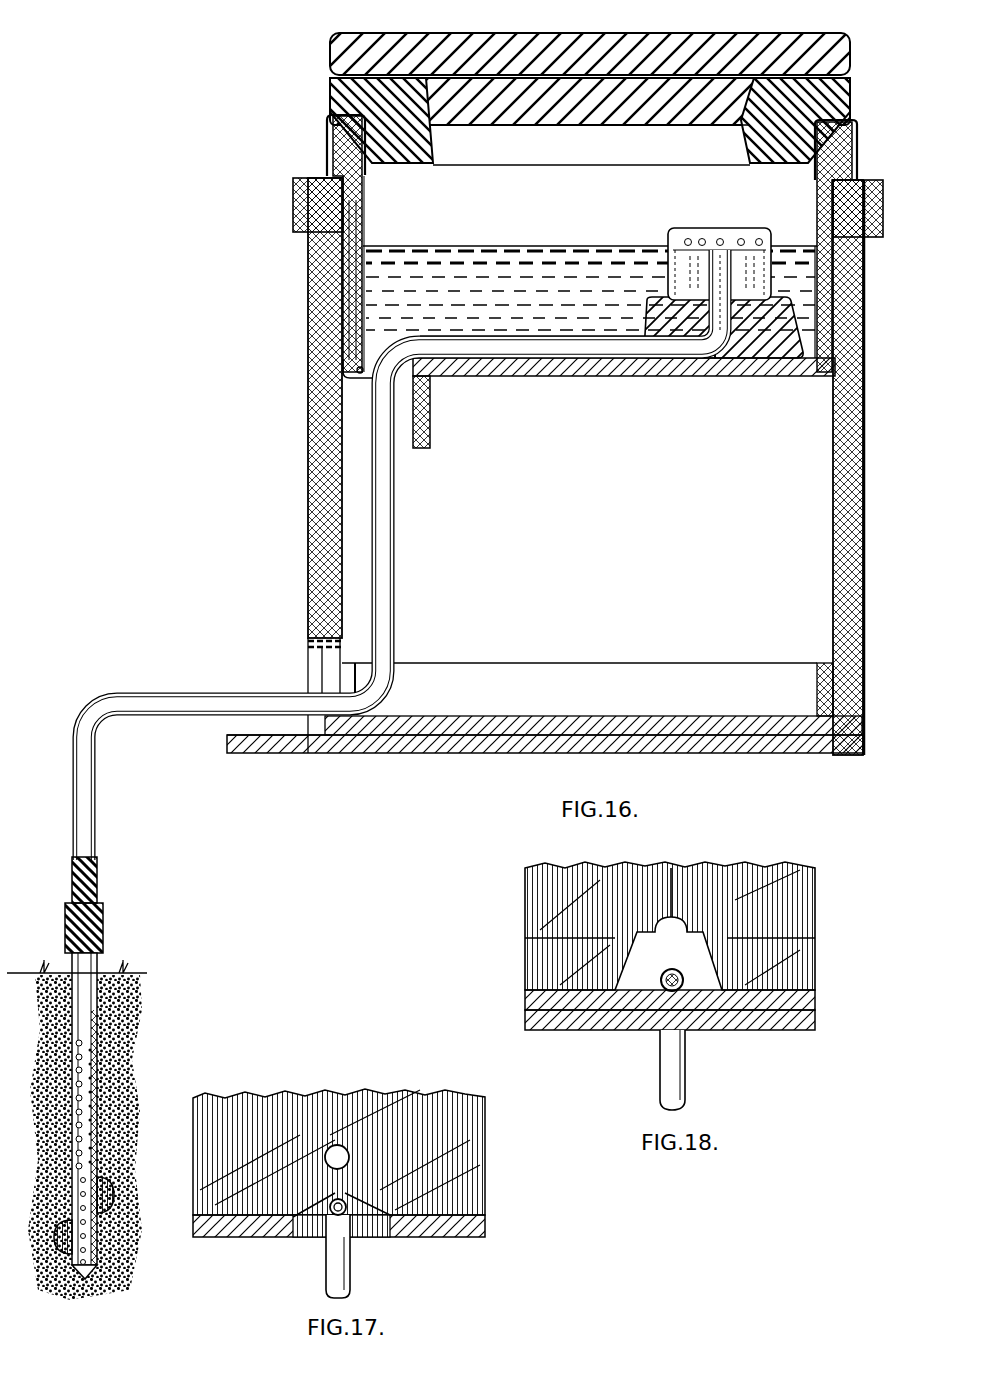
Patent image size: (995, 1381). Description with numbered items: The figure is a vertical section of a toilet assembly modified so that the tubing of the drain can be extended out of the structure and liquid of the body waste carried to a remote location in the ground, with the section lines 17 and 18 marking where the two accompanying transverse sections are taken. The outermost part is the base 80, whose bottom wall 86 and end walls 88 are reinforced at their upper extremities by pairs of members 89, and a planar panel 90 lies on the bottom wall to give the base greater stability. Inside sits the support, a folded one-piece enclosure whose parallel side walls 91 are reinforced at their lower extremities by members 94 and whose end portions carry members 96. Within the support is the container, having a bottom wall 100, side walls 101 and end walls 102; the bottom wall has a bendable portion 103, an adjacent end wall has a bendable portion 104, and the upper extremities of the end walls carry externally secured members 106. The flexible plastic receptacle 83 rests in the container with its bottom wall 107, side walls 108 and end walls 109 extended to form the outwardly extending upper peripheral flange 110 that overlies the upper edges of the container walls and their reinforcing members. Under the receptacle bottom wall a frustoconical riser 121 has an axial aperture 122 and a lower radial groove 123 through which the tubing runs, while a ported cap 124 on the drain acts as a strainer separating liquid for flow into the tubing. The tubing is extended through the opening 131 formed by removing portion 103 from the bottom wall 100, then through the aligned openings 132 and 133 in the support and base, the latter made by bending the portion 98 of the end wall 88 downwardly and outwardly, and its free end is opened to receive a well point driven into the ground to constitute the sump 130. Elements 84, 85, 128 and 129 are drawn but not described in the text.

In FIG. 16, the section line 17— 17 is at (403, 328).
In FIG. 16, the section line 18— 18 is at (355, 653).
In FIG. 16, the base 80 is at (870, 444).
In FIG. 16, the receptacle 83 is at (580, 220).
In FIG. 16, the lid gasket member 84 is at (319, 89).
In FIG. 16, the lid 85 is at (320, 34).
In FIG. 16, the bottom wall 86 is at (770, 751).
In FIG. 18, the bottom wall 86 is at (542, 1020).
In FIG. 16, the end wall 88 is at (320, 497).
In FIG. 16, the members 89 is at (294, 208).
In FIG. 16, the planar panel 90 is at (728, 738).
In FIG. 18, the planar panel 90 is at (545, 1000).
In FIG. 16, the side walls 91 is at (812, 554).
In FIG. 16, the members 94 is at (677, 696).
In FIG. 16, the members 96 is at (343, 684).
In FIG. 18, the members 96 is at (545, 968).
In FIG. 16, the bendable portion 98 is at (245, 743).
In FIG. 16, the bottom wall 100 is at (806, 367).
In FIG. 17, the bottom wall 100 is at (470, 1229).
In FIG. 16, the side walls 101 is at (704, 307).
In FIG. 16, the end walls 102 is at (352, 221).
In FIG. 16, the bendable portion 103 is at (432, 418).
In FIG. 16, the bendable portion 104 is at (352, 322).
In FIG. 17, the bendable portion 104 is at (318, 1165).
In FIG. 16, the members 106 is at (338, 157).
In FIG. 16, the bottom wall 107 is at (537, 341).
In FIG. 16, the side walls 108 is at (520, 215).
In FIG. 16, the end walls 109 is at (366, 210).
In FIG. 16, the upper peripheral flange 110 is at (327, 133).
In FIG. 16, the riser 121 is at (770, 347).
In FIG. 16, the axial aperture 122 is at (731, 353).
In FIG. 16, the lower radial groove 123 is at (665, 331).
In FIG. 16, the cap 124 is at (668, 233).
In FIG. 16, the upper lid layer 128 is at (568, 123).
In FIG. 16, the lower lid layer 129 is at (692, 126).
In FIG. 16, the sump 130 is at (97, 1034).
In FIG. 16, the opening 131 is at (368, 366).
In FIG. 17, the opening 131 is at (378, 1238).
In FIG. 16, the opening 132 is at (330, 656).
In FIG. 18, the opening 132 is at (706, 938).
In FIG. 16, the opening 133 is at (316, 677).